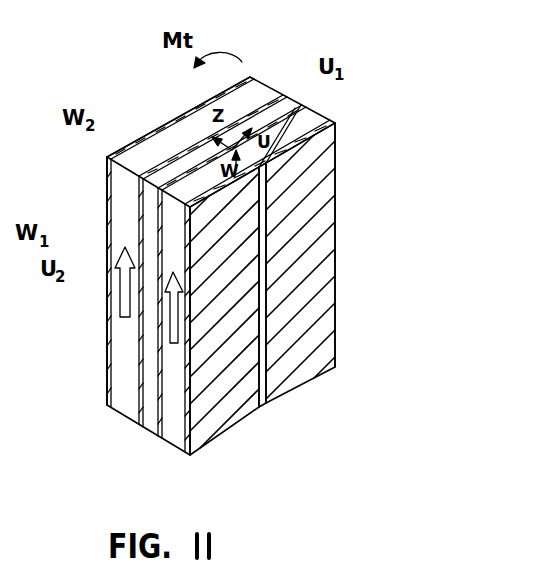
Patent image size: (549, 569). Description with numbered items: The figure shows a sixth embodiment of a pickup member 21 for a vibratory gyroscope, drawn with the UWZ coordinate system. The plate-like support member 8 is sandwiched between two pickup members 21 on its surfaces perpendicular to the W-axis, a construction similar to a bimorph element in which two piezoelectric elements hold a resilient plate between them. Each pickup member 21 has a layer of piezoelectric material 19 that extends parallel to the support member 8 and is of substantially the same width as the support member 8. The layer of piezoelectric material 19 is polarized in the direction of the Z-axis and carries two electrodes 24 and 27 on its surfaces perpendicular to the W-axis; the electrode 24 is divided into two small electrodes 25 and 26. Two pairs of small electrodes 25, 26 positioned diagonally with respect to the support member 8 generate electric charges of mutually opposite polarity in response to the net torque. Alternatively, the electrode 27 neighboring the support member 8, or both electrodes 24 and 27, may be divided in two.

The support member 8 is at (268, 118).
The layer of piezoelectric material 19 is at (126, 384).
The pickup member 21 is at (100, 334).
The electrode 24 is at (103, 291).
The small electrode 25 is at (120, 150).
The small electrode 26 is at (203, 107).
The electrode 27 is at (205, 172).